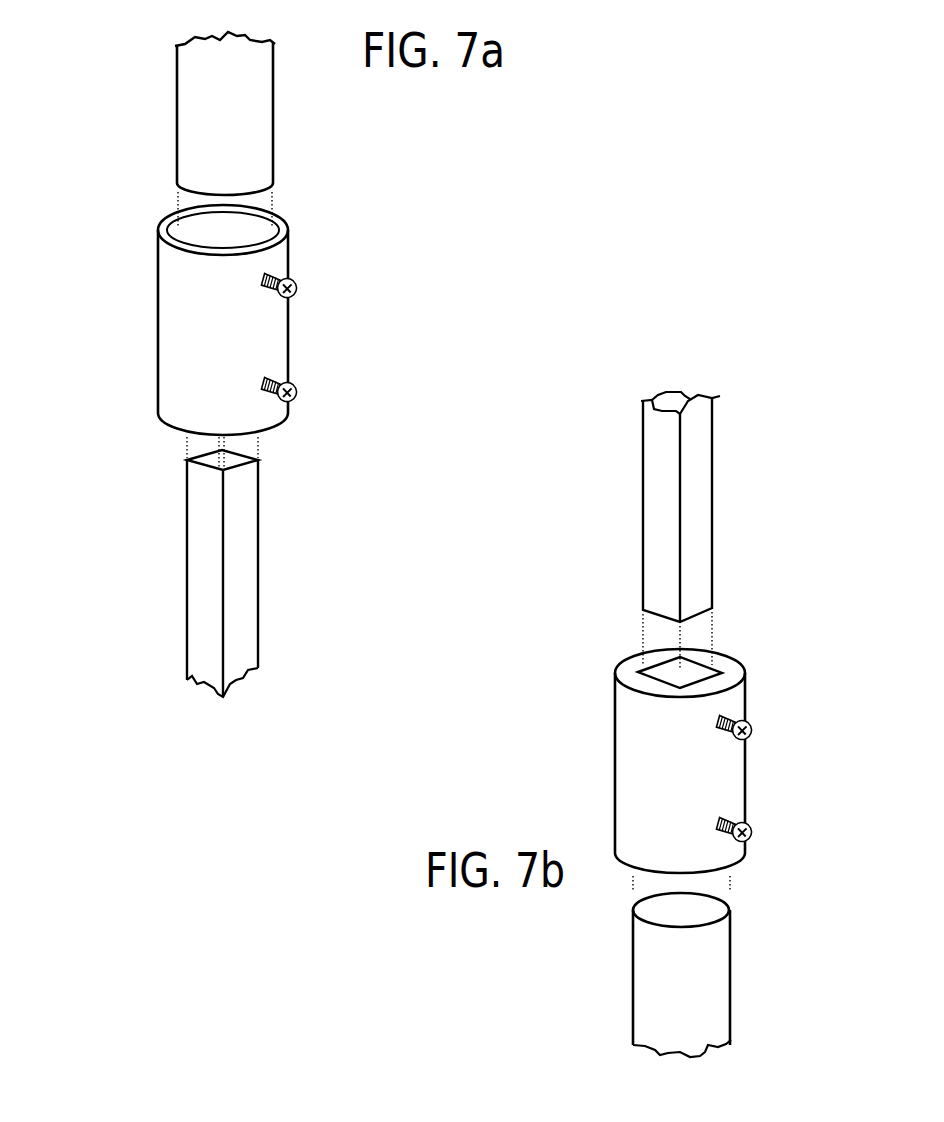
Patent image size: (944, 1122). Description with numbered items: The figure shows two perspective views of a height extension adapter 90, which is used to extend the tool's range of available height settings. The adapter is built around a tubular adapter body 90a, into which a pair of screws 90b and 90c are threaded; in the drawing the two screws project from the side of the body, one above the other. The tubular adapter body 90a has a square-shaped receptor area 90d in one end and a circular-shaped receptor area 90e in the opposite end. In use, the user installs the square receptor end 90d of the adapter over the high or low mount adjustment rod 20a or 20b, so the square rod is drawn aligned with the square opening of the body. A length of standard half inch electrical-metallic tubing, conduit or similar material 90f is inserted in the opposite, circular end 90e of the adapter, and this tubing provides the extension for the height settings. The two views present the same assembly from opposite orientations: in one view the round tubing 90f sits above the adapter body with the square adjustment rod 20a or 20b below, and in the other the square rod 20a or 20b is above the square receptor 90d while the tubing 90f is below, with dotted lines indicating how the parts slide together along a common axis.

In FIG. 7a, the height extension adapter 90 is at (138, 330).
In FIG. 7b, the height extension adapter 90 is at (586, 771).
In FIG. 7a, the tubular adapter body 90a is at (255, 340).
In FIG. 7b, the tubular adapter body 90a is at (723, 778).
In FIG. 7a, the screw 90b is at (297, 288).
In FIG. 7b, the screw 90b is at (752, 832).
In FIG. 7a, the screw 90c is at (297, 392).
In FIG. 7b, the screw 90c is at (752, 730).
In FIG. 7b, the square-shaped receptor area 90d is at (685, 668).
In FIG. 7a, the circular-shaped receptor area 90e is at (237, 223).
In FIG. 7a, the electrical-metallic tubing 90f is at (257, 112).
In FIG. 7b, the electrical-metallic tubing 90f is at (707, 988).
In FIG. 7a, the high mount adjustment rod 20a is at (320, 567).
In FIG. 7b, the high mount adjustment rod 20a is at (764, 530).
In FIG. 7a, the low mount adjustment rod 20b is at (243, 562).
In FIG. 7b, the low mount adjustment rod 20b is at (697, 487).